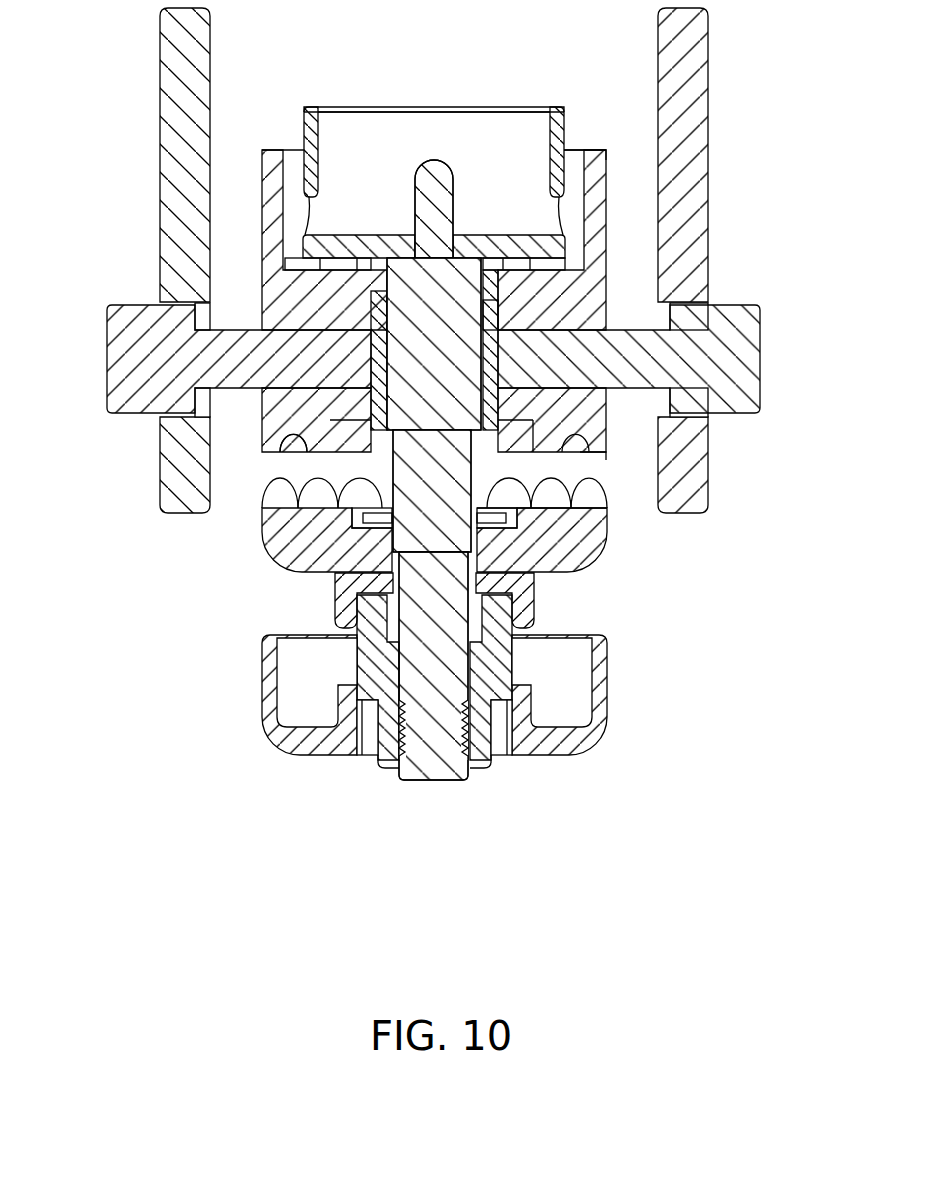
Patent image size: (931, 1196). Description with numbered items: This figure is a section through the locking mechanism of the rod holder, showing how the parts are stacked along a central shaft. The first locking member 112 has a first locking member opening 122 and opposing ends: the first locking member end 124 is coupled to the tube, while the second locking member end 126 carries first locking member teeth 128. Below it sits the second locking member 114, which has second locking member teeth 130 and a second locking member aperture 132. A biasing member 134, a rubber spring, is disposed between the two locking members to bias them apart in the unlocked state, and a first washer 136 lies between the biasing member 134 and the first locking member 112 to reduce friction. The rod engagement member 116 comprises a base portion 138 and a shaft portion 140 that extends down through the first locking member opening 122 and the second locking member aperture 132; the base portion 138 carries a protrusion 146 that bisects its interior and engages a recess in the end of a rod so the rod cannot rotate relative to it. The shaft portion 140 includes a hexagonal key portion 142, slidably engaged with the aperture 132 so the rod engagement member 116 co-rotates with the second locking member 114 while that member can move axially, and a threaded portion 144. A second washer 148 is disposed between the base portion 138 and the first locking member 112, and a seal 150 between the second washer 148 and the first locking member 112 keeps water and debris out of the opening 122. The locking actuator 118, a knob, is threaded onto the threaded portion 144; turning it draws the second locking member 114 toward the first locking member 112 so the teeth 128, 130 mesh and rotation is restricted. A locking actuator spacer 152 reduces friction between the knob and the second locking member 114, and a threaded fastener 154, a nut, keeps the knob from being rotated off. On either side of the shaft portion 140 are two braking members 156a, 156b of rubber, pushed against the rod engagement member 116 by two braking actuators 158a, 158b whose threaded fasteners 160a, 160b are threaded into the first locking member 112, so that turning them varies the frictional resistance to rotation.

The first locking member 112 is at (580, 192).
The second locking member 114 is at (295, 542).
The rod engagement member 116 is at (520, 123).
The locking actuator 118 is at (585, 677).
The first locking member opening 122 is at (385, 285).
The first locking member end 124 is at (575, 148).
The second locking member end 126 is at (590, 450).
The first locking member teeth 128 is at (560, 437).
The second locking member teeth 130 is at (292, 490).
The second locking member aperture 132 is at (478, 537).
The biasing member 134 is at (485, 468).
The first washer 136 is at (357, 428).
The base portion 138 is at (377, 142).
The shaft portion 140 is at (485, 303).
The key portion 142 is at (385, 520).
The threaded portion 144 is at (390, 685).
The protrusion 146 is at (445, 187).
The second washer 148 is at (500, 262).
The seal 150 is at (490, 275).
The locking actuator spacer 152 is at (520, 615).
The threaded fastener 154 is at (490, 753).
The braking member 156a is at (385, 305).
The braking member 156b is at (487, 325).
The braking actuator 158a is at (210, 18).
The braking actuator 158b is at (708, 18).
The threaded fastener 160a is at (117, 372).
The threaded fastener 160b is at (752, 342).